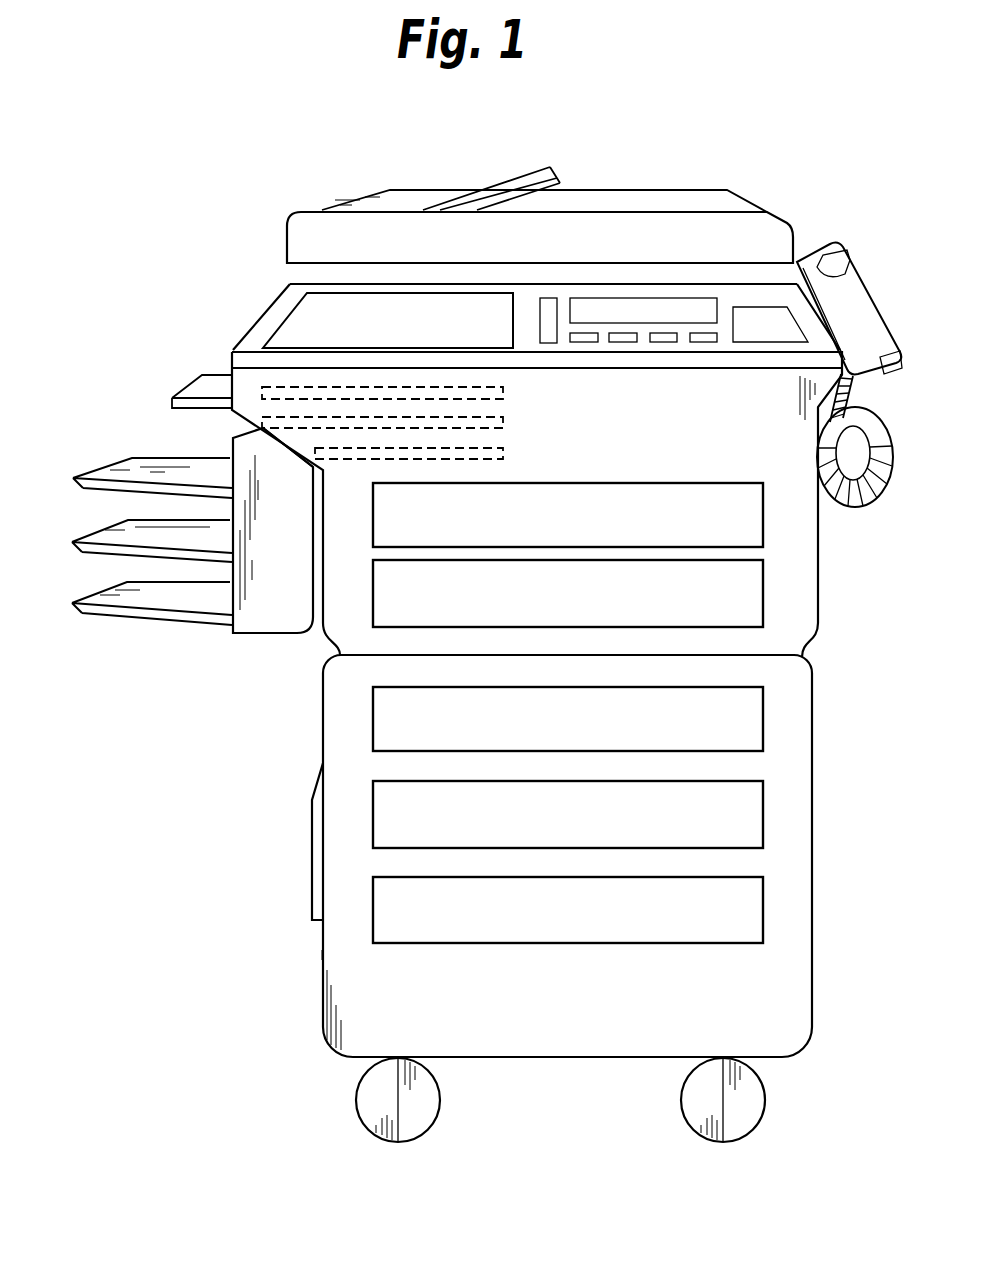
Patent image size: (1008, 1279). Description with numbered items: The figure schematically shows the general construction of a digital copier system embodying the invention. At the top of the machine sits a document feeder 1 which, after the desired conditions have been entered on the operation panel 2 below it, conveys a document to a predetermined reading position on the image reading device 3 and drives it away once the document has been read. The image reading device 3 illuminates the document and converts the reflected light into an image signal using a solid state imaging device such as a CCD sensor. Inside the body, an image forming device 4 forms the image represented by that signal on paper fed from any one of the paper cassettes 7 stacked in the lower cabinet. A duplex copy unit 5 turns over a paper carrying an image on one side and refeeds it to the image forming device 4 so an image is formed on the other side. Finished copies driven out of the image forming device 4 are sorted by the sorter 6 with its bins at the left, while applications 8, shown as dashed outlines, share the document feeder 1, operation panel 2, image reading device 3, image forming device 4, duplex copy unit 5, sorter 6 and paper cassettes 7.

The document feeder 1 is at (790, 227).
The operation panel 2 is at (296, 306).
The image reading device 3 is at (253, 321).
The image forming device 4 is at (763, 524).
The duplex copy unit 5 is at (763, 605).
The sorter 6 is at (82, 567).
The paper cassettes 7 is at (763, 722).
The applications 8 is at (512, 418).